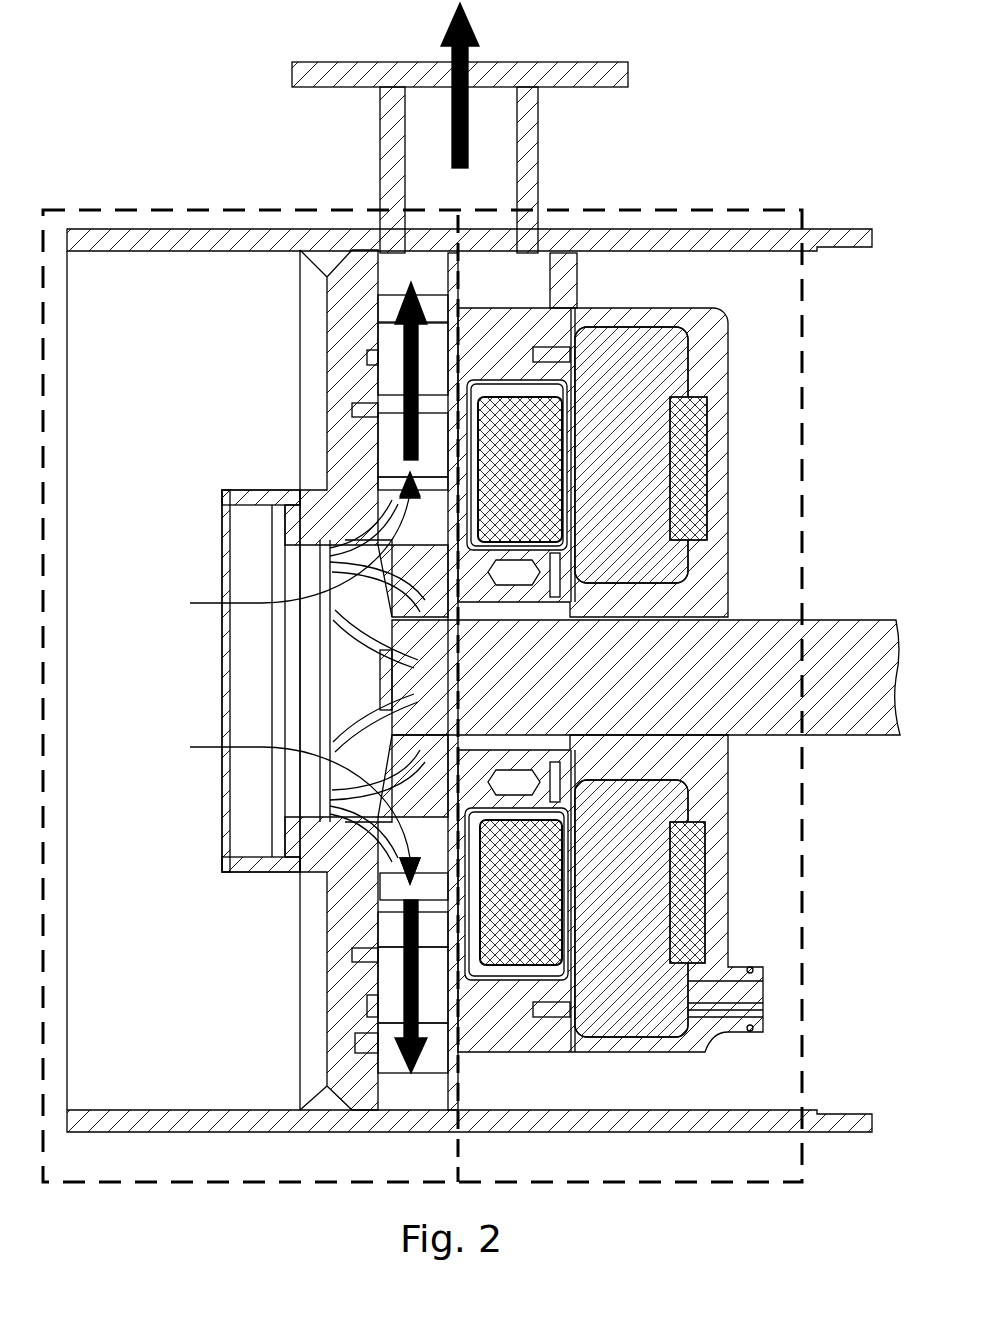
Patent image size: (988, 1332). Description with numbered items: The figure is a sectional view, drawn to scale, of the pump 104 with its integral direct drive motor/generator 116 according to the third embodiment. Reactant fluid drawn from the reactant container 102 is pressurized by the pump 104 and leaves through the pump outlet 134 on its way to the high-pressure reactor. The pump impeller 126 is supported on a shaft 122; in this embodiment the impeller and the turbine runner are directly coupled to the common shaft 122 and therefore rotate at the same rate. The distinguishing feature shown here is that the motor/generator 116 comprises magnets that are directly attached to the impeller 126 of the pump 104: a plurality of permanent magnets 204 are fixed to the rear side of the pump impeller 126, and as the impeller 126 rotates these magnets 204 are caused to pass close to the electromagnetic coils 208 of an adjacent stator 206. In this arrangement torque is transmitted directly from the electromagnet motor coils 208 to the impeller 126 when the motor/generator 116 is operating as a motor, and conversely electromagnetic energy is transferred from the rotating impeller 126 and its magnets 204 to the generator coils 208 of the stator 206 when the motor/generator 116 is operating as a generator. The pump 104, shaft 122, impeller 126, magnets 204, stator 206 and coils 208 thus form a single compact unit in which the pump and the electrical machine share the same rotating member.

The reactant container 102 is at (138, 674).
The pump 104 is at (135, 210).
The motor/generator 116 is at (715, 210).
The shaft 122 is at (656, 692).
The pump impeller 126 is at (478, 588).
The pump outlet 134 is at (480, 200).
The permanent magnets 204 is at (538, 468).
The stator 206 is at (680, 308).
The electromagnetic coils 208 is at (650, 404).